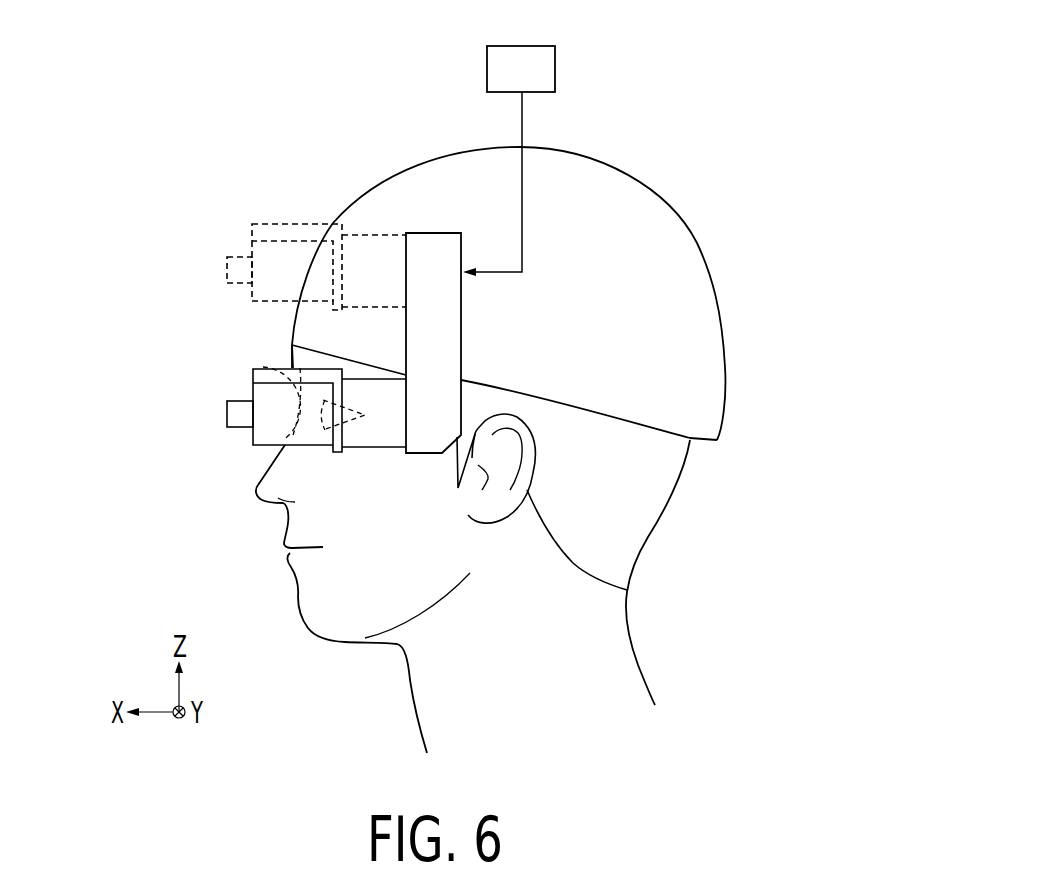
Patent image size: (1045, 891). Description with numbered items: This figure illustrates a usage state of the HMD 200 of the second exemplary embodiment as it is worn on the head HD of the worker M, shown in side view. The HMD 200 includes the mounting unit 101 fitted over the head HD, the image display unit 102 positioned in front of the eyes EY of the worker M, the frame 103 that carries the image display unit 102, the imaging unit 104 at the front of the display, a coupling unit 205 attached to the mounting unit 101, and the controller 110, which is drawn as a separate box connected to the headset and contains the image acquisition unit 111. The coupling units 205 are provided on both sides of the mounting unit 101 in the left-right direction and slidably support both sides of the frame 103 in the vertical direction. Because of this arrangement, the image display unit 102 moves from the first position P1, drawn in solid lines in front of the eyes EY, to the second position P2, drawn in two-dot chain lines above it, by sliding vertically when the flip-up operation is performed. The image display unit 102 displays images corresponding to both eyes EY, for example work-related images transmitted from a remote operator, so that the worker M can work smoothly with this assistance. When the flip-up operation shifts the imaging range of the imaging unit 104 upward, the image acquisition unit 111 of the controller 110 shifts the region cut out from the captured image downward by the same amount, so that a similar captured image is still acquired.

The controller 110 is at (596, 141).
The image acquisition unit 111 is at (540, 45).
The HMD 200 is at (435, 378).
The mounting unit 101 is at (673, 257).
The coupling unit 205 is at (430, 248).
The image display unit 102 is at (275, 435).
The frame 103 is at (392, 447).
The imaging unit 104 is at (227, 418).
The first position P1 is at (302, 505).
The second position P2 is at (149, 220).
The eyes EY is at (303, 405).
The head HD is at (657, 467).
The worker M is at (523, 549).